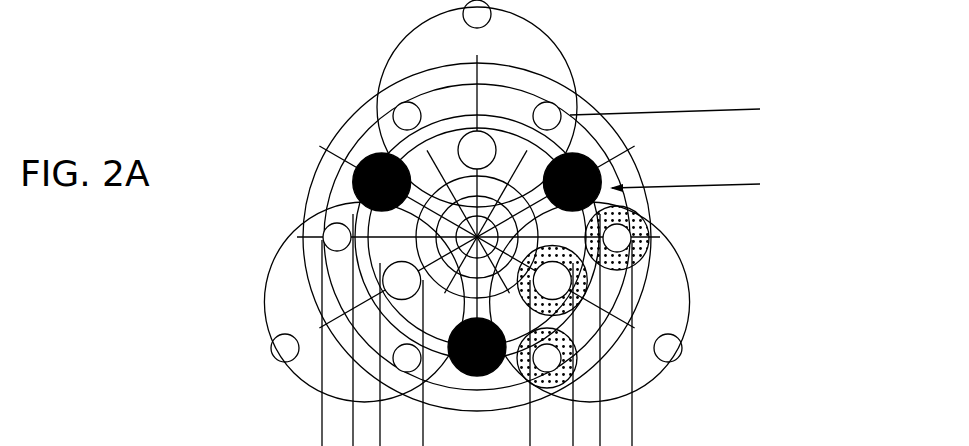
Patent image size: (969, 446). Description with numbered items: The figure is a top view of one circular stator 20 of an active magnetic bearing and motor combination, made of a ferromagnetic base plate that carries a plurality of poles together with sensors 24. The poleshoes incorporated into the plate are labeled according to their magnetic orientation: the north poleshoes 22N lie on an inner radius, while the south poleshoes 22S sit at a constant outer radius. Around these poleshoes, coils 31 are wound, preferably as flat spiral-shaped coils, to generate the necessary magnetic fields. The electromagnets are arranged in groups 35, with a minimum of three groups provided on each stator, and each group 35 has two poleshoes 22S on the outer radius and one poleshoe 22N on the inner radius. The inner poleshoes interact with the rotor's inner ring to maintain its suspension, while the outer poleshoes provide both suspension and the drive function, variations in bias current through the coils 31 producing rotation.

The stator 20 is at (580, 99).
The north poleshoe 22N is at (483, 133).
The south poleshoe 22S is at (392, 112).
The sensor 24 is at (622, 156).
The coil 31 is at (668, 312).
The group of electromagnets 35 is at (262, 278).